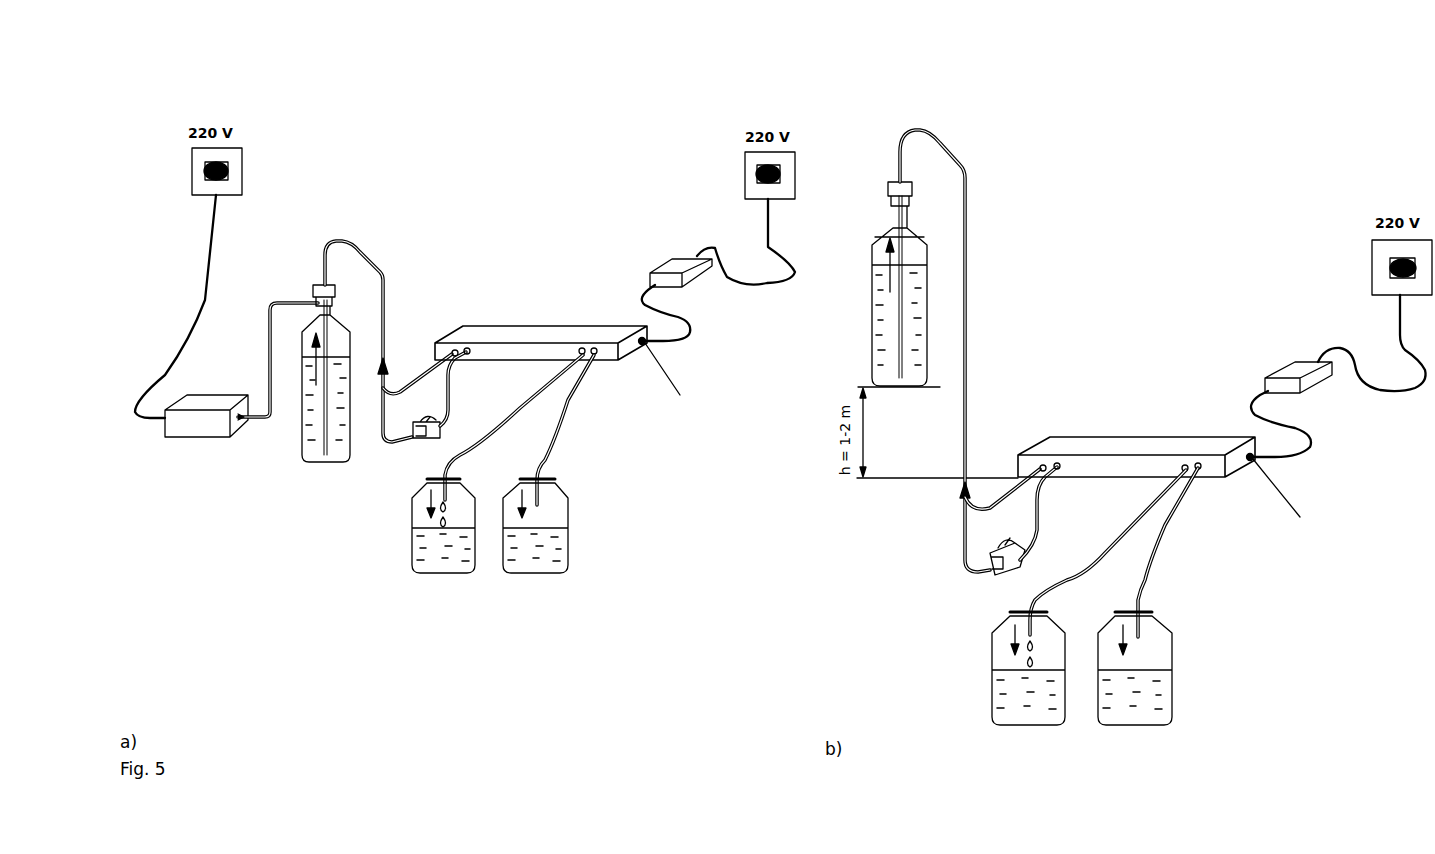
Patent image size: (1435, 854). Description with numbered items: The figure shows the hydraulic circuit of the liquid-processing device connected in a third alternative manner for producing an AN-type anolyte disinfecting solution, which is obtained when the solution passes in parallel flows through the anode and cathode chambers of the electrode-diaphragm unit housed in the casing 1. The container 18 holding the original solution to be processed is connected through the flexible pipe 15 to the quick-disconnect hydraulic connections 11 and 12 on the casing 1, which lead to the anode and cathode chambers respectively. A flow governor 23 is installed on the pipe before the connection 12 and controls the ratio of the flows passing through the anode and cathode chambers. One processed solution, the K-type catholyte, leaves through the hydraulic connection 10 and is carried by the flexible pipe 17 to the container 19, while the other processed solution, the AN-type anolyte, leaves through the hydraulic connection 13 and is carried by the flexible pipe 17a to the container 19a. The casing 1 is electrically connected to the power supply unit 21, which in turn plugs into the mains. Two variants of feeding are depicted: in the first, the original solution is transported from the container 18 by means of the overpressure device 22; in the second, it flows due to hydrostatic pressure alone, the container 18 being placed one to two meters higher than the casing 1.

The casing 1 is at (510, 330).
The hole 10 is at (581, 346).
The hole 11 is at (452, 345).
The hole 12 is at (470, 348).
The hole 13 is at (597, 362).
The flexible pipe 15 is at (367, 253).
The flexible pipe 17 is at (510, 413).
The flexible pipe 17a is at (570, 405).
The container 18 is at (308, 448).
The container 19 is at (420, 537).
The container 19a is at (563, 540).
The power supply unit 21 is at (673, 262).
The device for creating overpressure 22 is at (180, 420).
The flow governor 23 is at (415, 437).